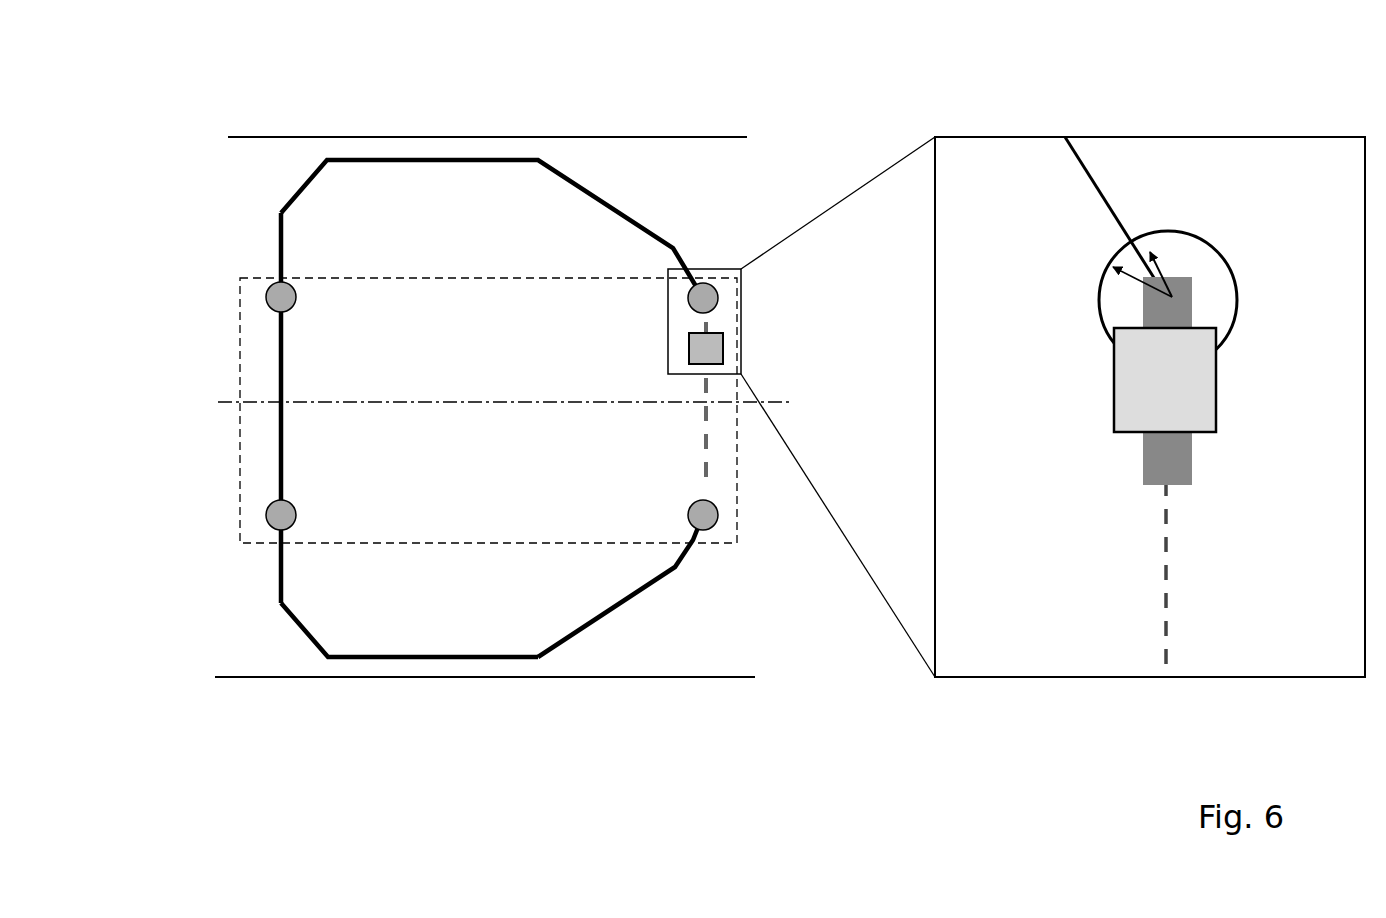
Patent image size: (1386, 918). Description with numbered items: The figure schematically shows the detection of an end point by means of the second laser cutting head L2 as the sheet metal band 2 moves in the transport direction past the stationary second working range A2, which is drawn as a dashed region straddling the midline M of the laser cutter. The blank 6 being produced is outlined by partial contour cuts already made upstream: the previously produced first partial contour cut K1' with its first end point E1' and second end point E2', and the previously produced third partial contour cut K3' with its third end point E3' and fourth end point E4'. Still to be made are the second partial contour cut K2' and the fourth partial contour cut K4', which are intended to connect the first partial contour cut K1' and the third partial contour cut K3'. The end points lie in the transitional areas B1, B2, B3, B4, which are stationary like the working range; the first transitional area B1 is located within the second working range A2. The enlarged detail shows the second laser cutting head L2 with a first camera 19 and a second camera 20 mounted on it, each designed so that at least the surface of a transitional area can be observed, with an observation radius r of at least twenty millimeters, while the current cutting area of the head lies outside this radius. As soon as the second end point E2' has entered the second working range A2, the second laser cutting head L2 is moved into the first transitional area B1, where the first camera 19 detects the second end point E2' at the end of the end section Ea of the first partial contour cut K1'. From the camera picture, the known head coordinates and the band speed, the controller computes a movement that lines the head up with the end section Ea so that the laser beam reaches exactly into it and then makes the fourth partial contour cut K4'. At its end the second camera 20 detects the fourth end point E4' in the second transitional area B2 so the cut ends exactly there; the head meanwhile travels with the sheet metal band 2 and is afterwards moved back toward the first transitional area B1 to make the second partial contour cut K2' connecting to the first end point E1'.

The sheet metal band 2 is at (279, 170).
The first partial contour cut K1' is at (740, 180).
The second partial contour cut K2' is at (224, 408).
The third partial contour cut K3' is at (409, 669).
The fourth partial contour cut K4' is at (1007, 481).
The blank 6 is at (540, 620).
The second working range A2 is at (568, 278).
The midline M is at (218, 401).
The first end point E1' is at (236, 255).
The second end point E2' is at (931, 274).
The third end point E3' is at (240, 557).
The fourth end point E4' is at (746, 565).
The first transitional area B1 is at (687, 303).
The second transitional area B2 is at (688, 510).
The third transitional area B3 is at (293, 300).
The fourth transitional area B4 is at (292, 512).
The second laser cutting head L2 is at (708, 350).
The first camera 19 is at (1178, 310).
The second camera 20 is at (1187, 457).
The end section Ea is at (1165, 277).
The observation radius r is at (1133, 282).